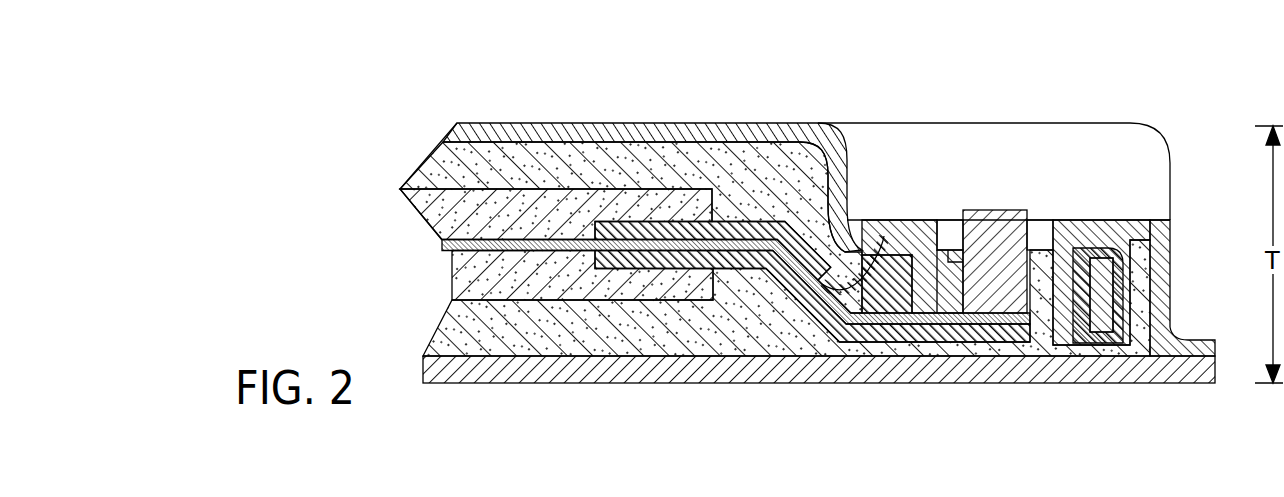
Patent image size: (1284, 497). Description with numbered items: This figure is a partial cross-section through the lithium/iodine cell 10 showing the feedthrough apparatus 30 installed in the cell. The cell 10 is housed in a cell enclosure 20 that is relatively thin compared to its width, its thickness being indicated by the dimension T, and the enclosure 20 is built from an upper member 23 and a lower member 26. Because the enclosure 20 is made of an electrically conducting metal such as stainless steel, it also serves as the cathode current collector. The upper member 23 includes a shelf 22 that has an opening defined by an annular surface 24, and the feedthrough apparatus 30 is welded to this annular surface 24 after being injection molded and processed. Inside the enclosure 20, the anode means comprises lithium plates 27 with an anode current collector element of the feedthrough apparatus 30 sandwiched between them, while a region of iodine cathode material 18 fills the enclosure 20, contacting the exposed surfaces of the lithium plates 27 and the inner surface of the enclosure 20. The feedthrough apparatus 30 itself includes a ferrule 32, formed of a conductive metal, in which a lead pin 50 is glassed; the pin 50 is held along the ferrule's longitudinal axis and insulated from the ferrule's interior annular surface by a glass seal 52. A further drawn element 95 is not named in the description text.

The lithium/iodine cell 10 is at (1016, 106).
The cell enclosure 20 is at (508, 122).
The upper member 23 is at (748, 122).
The lithium plates 27 is at (453, 278).
The shelf 22 is at (867, 220).
The ferrule 32 is at (923, 220).
The pin 50 is at (999, 215).
The annular surface 24 is at (1072, 228).
The side wall 95 is at (1127, 237).
The cathode material 18 is at (583, 330).
The feedthrough apparatus 30 is at (783, 320).
The glass seal 52 is at (1053, 283).
The lower member 26 is at (1048, 384).